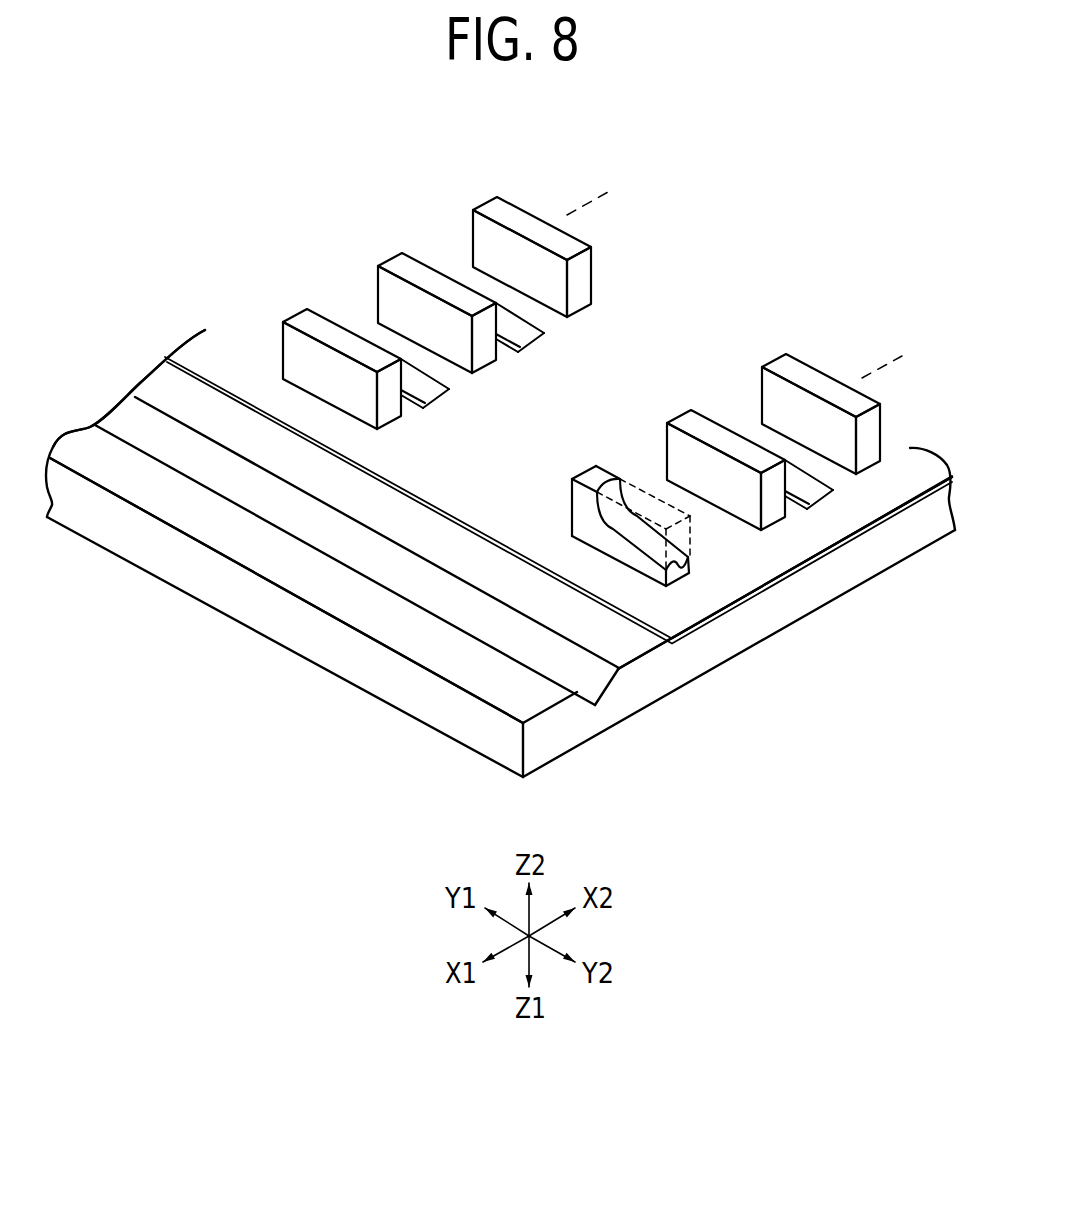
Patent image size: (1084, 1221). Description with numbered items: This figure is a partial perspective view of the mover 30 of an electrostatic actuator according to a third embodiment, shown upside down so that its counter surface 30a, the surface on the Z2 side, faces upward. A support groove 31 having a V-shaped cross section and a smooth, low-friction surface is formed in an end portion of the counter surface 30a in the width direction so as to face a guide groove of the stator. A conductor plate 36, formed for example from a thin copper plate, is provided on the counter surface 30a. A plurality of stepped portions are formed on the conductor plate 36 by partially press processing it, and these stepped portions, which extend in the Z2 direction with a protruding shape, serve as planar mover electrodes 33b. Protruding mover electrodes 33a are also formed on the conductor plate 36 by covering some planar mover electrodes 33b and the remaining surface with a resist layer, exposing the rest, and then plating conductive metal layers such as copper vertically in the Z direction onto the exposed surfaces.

The mover 30 is at (423, 692).
The counter surface 30a is at (353, 497).
The support groove 31 is at (587, 677).
The conductor plate 36 is at (430, 512).
The protruding mover electrode 33a is at (483, 203).
The planar mover electrode 33b is at (526, 329).